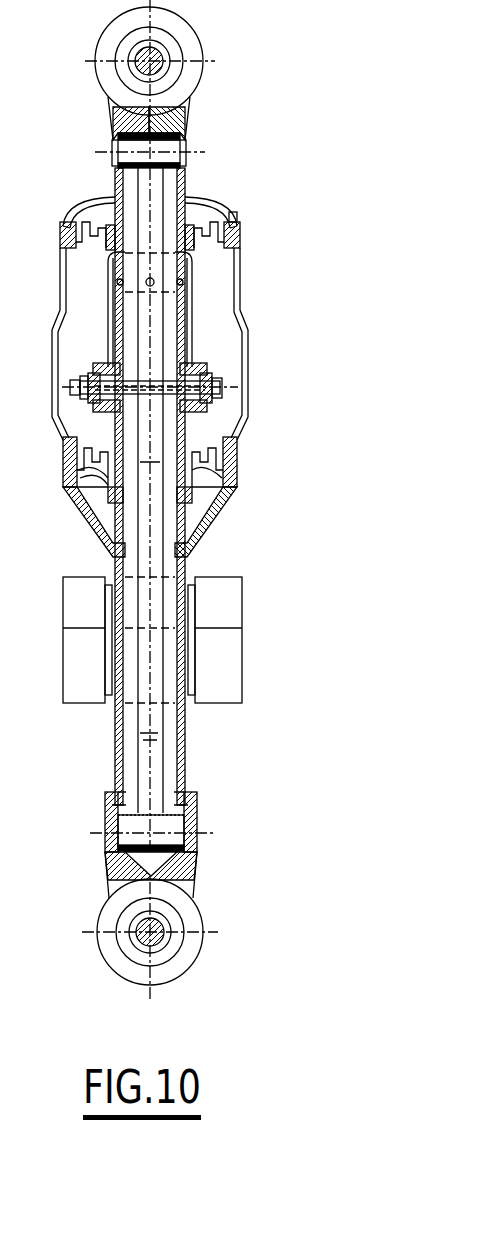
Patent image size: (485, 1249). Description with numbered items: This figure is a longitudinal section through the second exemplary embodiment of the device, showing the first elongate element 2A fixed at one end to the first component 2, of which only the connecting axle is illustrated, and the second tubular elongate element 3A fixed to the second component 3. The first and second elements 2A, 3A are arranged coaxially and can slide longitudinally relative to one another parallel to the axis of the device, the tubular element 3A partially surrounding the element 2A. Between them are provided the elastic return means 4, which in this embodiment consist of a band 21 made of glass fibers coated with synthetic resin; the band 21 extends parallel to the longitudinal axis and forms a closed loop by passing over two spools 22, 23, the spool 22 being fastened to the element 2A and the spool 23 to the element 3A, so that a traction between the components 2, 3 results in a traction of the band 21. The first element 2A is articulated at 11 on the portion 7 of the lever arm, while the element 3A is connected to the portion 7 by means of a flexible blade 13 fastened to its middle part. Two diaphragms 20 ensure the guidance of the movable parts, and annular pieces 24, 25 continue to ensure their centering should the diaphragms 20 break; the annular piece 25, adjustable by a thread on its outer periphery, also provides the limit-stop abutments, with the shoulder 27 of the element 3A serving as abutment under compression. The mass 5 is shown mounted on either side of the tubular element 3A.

The first component 2 is at (165, 57).
The first elongate element 2A is at (106, 128).
The spool 22 is at (181, 147).
The annular piece 24 is at (104, 206).
The diaphragms 20 is at (213, 214).
The elastic return means 4 is at (115, 305).
The flexible blade 13 is at (188, 308).
The articulation 11 is at (115, 352).
The portion of the lever arm 7 is at (90, 357).
The annular piece 25 is at (85, 492).
The shoulder 27 is at (200, 513).
The mass 5 is at (228, 602).
The band 21 is at (157, 755).
The spool 23 is at (122, 838).
The second tubular elongate element 3A is at (202, 850).
The second component 3 is at (140, 923).